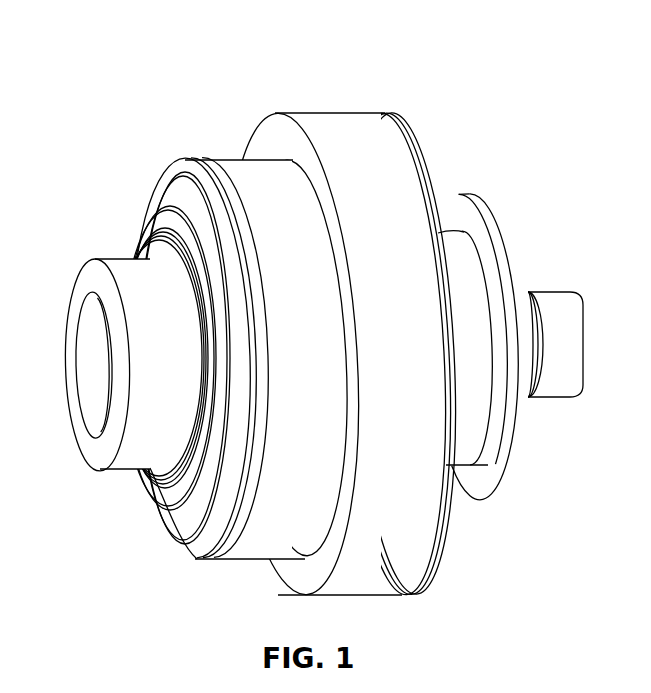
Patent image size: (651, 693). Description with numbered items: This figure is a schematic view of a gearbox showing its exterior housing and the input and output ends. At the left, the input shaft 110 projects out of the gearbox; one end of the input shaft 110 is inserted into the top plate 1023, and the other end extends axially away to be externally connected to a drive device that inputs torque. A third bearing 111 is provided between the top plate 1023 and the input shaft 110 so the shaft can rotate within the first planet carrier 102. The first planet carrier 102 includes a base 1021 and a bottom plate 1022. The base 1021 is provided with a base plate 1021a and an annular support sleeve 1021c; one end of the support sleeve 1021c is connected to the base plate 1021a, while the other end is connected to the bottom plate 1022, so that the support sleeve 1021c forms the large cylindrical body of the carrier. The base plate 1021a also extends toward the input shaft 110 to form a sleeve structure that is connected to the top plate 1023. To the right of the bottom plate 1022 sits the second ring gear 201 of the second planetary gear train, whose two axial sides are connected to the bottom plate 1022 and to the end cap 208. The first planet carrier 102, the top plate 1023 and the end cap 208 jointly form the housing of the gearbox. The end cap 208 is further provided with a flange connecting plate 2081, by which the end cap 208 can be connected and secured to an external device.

The first planet carrier 102 is at (390, 110).
The base 1021 is at (277, 116).
The bottom plate 1022 is at (383, 110).
The top plate 1023 is at (183, 162).
The third bearing 111 is at (160, 213).
The input shaft 110 is at (88, 244).
The second ring gear 201 is at (456, 251).
The flange connecting plate 2081 is at (491, 210).
The end cap 208 is at (552, 292).
The base plate 1021a is at (292, 568).
The annular support sleeve 1021c is at (407, 567).